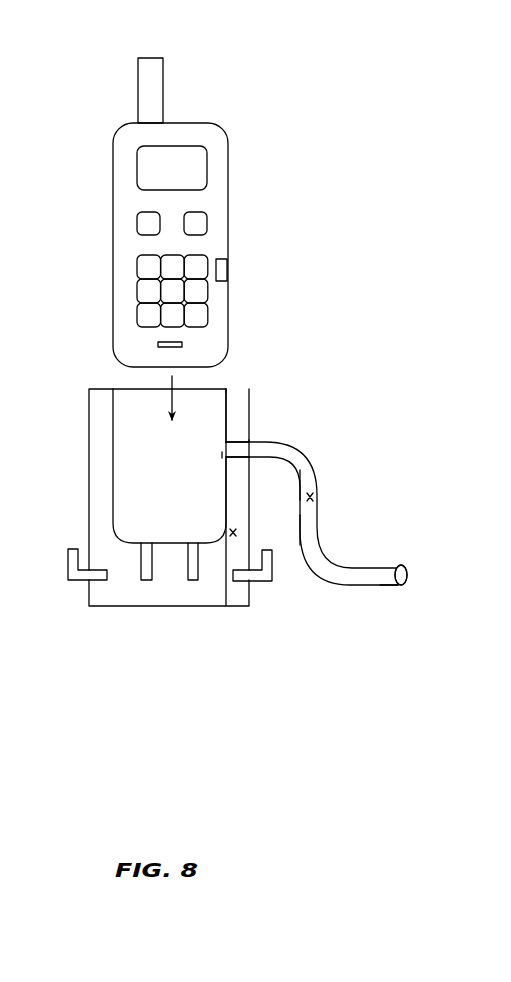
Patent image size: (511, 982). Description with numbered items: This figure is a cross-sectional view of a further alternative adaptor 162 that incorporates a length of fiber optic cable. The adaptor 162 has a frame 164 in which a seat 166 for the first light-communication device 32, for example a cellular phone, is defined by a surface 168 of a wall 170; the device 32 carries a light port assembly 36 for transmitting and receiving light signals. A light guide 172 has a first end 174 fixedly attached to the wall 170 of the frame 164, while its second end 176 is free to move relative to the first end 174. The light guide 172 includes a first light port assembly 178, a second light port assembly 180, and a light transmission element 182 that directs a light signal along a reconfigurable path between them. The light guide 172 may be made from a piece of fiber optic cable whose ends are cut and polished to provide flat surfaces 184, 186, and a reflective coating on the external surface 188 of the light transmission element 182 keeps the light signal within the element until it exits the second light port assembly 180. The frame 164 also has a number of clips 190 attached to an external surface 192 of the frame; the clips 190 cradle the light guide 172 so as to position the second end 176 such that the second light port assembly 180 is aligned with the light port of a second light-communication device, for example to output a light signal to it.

The first light-communication device 32 is at (214, 187).
The light port assembly 36 is at (223, 272).
The adaptor 162 is at (332, 333).
The frame 164 is at (258, 396).
The seat 166 is at (168, 489).
The surface 168 is at (226, 413).
The wall 170 is at (238, 491).
The light guide 172 is at (320, 458).
The first end 174 is at (252, 438).
The second end 176 is at (399, 560).
The first light port assembly 178 is at (233, 450).
The second light port assembly 180 is at (397, 584).
The light transmission element 182 is at (310, 538).
The flat surface 184 is at (222, 455).
The flat surface 186 is at (408, 573).
The external surface 188 is at (313, 497).
The clips 190 is at (148, 582).
The external surface 192 is at (236, 532).